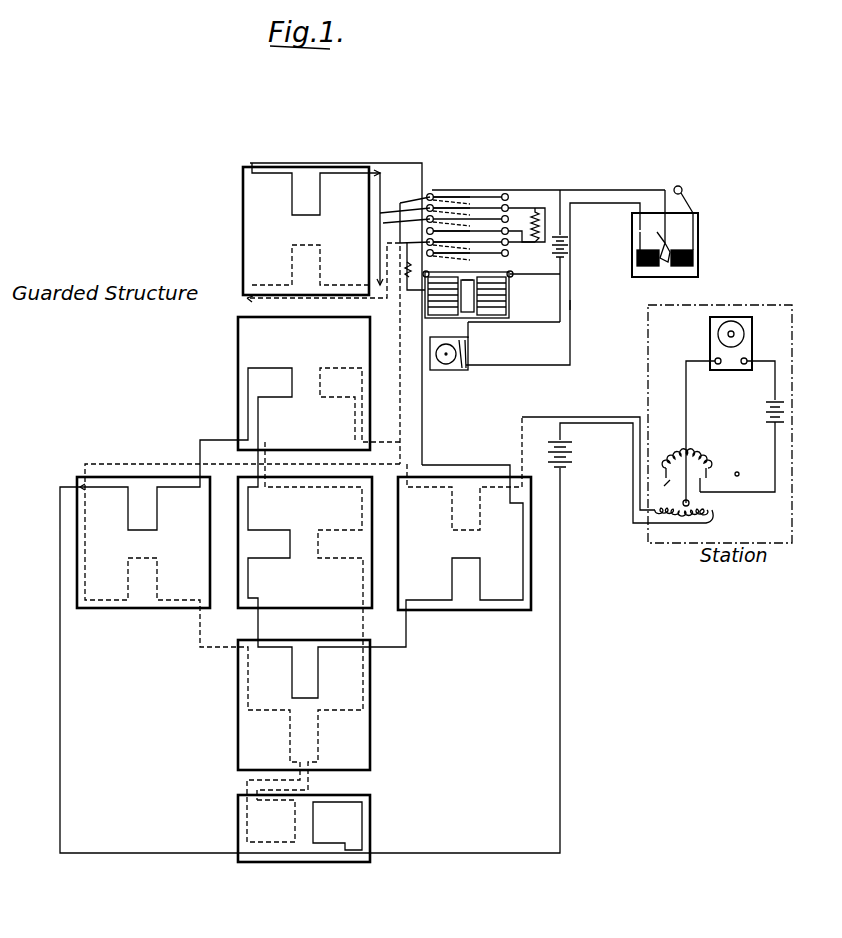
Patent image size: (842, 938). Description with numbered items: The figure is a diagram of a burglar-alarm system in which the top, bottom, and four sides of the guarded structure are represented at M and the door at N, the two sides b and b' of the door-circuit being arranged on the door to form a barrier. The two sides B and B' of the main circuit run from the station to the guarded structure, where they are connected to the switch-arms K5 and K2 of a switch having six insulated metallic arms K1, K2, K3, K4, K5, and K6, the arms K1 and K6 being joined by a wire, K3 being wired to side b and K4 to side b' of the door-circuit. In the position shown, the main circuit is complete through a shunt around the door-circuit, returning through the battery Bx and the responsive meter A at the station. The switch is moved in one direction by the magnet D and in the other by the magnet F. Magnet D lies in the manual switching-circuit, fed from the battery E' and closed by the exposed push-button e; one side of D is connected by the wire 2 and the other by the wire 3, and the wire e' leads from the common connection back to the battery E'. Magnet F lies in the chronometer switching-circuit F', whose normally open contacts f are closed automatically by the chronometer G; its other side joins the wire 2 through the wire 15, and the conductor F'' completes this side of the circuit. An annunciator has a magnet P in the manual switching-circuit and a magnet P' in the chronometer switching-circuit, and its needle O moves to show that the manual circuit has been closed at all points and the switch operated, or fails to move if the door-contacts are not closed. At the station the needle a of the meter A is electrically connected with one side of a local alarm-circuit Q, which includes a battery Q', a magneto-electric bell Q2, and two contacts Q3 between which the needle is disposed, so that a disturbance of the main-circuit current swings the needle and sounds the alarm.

The door N is at (243, 243).
The side of the door-circuit b is at (336, 314).
The other side of the door-circuit b' is at (323, 353).
The switch-arm K4 is at (440, 234).
The switch-arm K3 is at (455, 222).
The switch-arm K1 is at (478, 200).
The switch-arm K2 is at (493, 211).
The switch-arm K5 is at (455, 250).
The switch-arm K6 is at (472, 258).
The chronometer switching-circuit F' is at (548, 172).
The battery E' is at (548, 256).
The magnet D is at (452, 300).
The magnet F is at (474, 273).
The wire 3 is at (403, 270).
The wire 15 is at (543, 275).
The wire 2 is at (514, 319).
The chronometer G is at (441, 346).
The contacts f is at (468, 352).
The wire e' is at (613, 218).
The conductor F'' is at (586, 305).
The push-button e is at (683, 187).
The needle of the annunciator O is at (640, 241).
The magnet P' is at (646, 279).
The magnet P is at (681, 279).
The side of the main circuit B is at (310, 610).
The side of the main circuit B' is at (303, 605).
The battery Bx is at (617, 470).
The guarded structure M is at (238, 363).
The magneto-electric bell Q2 is at (731, 343).
The battery Q' is at (742, 426).
The contacts Q3 is at (704, 463).
The needle of the meter a is at (684, 487).
The responsive device A is at (708, 485).
The local alarm-circuit Q is at (706, 491).